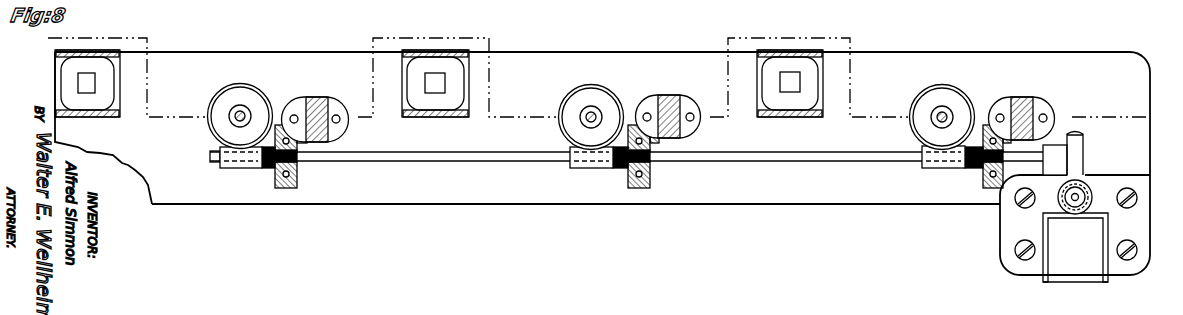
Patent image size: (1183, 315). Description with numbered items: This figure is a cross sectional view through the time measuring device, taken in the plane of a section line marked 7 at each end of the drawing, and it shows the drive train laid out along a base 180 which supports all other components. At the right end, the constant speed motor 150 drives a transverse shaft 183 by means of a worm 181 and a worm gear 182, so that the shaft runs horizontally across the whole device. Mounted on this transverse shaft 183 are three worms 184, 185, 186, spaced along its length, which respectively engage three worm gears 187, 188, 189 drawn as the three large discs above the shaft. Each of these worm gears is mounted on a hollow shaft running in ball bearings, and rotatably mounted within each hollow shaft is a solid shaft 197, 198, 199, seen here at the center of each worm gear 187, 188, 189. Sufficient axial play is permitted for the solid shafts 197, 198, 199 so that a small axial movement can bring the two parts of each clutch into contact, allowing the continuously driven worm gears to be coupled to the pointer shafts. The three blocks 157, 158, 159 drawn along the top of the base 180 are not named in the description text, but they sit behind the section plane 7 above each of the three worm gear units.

The section line 7- 7 is at (599, 82).
The constant speed motor 150 is at (1134, 264).
The support block 157 is at (68, 70).
The support block 158 is at (416, 80).
The support block 159 is at (770, 80).
The base 180 is at (949, 52).
The worm 181 is at (1089, 192).
The worm gear 182 is at (1080, 142).
The transverse shaft 183 is at (830, 152).
The worm 184 is at (238, 167).
The worm 185 is at (586, 167).
The worm 186 is at (940, 167).
The worm gear 187 is at (246, 89).
The worm gear 188 is at (597, 90).
The worm gear 189 is at (957, 92).
The solid shaft 197 is at (234, 114).
The solid shaft 198 is at (585, 120).
The solid shaft 199 is at (935, 119).